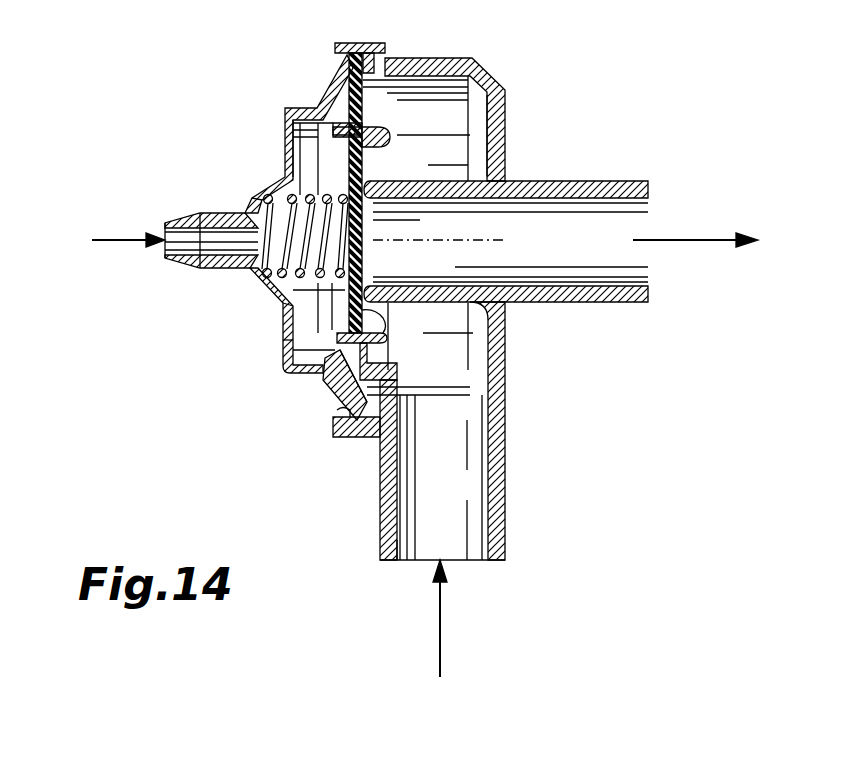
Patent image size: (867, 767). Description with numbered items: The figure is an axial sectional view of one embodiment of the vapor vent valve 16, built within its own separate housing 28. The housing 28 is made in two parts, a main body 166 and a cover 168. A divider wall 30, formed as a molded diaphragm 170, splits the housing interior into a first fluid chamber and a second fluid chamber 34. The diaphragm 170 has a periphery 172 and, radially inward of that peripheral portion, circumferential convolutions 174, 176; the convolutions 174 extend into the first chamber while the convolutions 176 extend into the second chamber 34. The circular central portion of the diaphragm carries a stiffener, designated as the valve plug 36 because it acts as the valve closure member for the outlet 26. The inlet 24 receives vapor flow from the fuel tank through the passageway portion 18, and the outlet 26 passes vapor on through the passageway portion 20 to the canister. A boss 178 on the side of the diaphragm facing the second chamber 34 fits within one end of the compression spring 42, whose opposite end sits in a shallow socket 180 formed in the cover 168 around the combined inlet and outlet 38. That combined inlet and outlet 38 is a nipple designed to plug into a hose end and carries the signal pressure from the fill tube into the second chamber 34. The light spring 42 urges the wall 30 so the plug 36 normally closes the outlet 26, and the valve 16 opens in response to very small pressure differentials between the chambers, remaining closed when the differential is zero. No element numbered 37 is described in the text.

The vapor vent valve 16 is at (312, 96).
The vapor recovery passageway portion 18 is at (438, 625).
The vapor recovery passageway portion 20 is at (700, 238).
The inlet 24 is at (433, 538).
The outlet 26 is at (633, 212).
The housing 28 is at (505, 112).
The movable wall 30 is at (386, 148).
The second fluid chamber 34 is at (298, 132).
The valve plug 36 is at (363, 259).
The valve chamber 37 is at (447, 352).
The combined inlet/outlet 38 is at (94, 234).
The light pressure spring 42 is at (328, 166).
The main body 166 is at (507, 178).
The cover 168 is at (252, 278).
The molded diaphragm 170 is at (330, 383).
The periphery 172 is at (338, 412).
The circumferential convolutions 174 is at (447, 352).
The circumferential convolutions 176 is at (282, 345).
The boss 178 is at (288, 303).
The shallow socket 180 is at (240, 222).